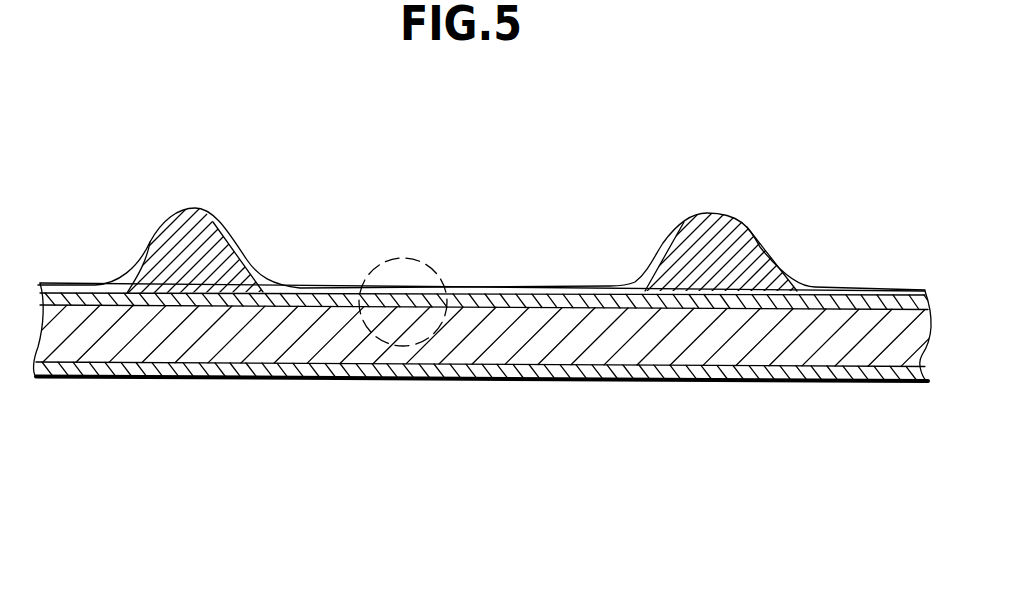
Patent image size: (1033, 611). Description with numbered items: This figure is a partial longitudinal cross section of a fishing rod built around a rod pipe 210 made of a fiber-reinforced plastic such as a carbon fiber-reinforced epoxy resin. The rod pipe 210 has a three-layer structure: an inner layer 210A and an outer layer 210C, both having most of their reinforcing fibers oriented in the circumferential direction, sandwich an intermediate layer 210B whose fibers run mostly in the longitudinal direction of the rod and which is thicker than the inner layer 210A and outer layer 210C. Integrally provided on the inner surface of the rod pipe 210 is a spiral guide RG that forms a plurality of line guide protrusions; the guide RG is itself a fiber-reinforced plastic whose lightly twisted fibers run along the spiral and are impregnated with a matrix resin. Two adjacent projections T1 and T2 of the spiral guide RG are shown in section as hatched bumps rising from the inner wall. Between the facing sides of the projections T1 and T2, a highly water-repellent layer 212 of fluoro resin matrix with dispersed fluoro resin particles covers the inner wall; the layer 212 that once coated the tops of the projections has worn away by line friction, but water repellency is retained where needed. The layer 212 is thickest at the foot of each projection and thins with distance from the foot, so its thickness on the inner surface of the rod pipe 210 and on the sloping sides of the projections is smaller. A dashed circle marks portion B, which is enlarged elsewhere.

The rod pipe 210 is at (500, 402).
The inner layer 210A is at (167, 305).
The intermediate layer 210B is at (267, 342).
The outer layer 210C is at (122, 462).
The highly water-repellent layer 212 is at (110, 287).
The projection T1 is at (193, 222).
The projection T2 is at (711, 228).
The spiral guide RG is at (738, 140).
The portion B is at (414, 258).